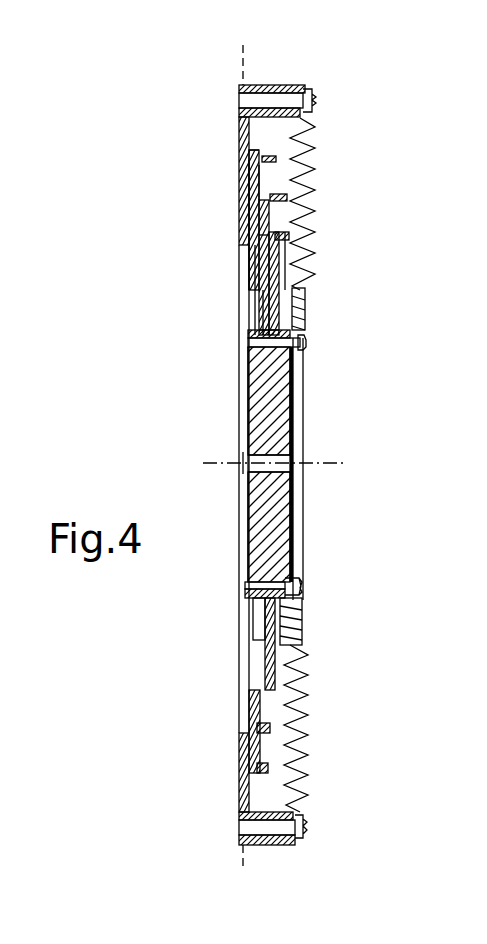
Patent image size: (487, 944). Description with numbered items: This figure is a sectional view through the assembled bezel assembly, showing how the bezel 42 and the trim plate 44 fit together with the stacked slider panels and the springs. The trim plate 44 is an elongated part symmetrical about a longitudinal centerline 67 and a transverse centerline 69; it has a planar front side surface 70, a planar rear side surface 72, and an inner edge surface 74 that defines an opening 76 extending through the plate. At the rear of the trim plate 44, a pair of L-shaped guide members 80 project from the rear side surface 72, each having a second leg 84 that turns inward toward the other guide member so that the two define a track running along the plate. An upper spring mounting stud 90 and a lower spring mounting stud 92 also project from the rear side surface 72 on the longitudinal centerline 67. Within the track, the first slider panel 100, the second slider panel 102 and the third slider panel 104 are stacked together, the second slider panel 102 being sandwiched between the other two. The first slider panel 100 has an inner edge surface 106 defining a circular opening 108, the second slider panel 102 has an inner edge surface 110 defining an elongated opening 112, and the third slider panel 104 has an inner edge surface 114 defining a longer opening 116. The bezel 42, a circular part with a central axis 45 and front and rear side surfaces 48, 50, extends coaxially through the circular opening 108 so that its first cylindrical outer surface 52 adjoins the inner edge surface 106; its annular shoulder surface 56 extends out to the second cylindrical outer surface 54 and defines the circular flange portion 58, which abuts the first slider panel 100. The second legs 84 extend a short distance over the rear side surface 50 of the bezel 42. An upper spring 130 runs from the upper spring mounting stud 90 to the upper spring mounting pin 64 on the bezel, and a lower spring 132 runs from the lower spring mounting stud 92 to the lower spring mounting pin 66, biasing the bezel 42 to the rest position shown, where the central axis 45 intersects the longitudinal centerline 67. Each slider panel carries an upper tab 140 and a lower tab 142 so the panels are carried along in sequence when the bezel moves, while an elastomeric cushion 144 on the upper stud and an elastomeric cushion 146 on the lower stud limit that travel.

The bezel 42 is at (306, 412).
The trim plate 44 is at (232, 125).
The central axis 45 is at (318, 463).
The front side surface 48 is at (248, 522).
The rear side surface 50 is at (292, 520).
The first cylindrical outer surface 52 is at (265, 603).
The second cylindrical outer surface 54 is at (268, 613).
The annular shoulder surface 56 is at (302, 625).
The circular flange portion 58 is at (284, 602).
The upper spring mounting pin 64 is at (304, 343).
The lower spring mounting pin 66 is at (298, 586).
The longitudinal centerline 67 is at (240, 53).
The transverse centerline 69 is at (243, 462).
The front side surface 70 is at (249, 163).
The rear side surface 72 is at (256, 145).
The inner edge surface 74 is at (249, 210).
The opening 76 is at (236, 228).
The guide member 80 is at (316, 373).
The second leg 84 is at (298, 392).
The upper spring mounting stud 90 is at (290, 93).
The lower spring mounting stud 92 is at (287, 845).
The first slider panel 100 is at (305, 292).
The second slider panel 102 is at (292, 255).
The third slider panel 104 is at (275, 180).
The inner edge surface 106 is at (262, 336).
The circular opening 108 is at (236, 382).
The inner edge surface 110 is at (263, 298).
The opening 112 is at (248, 317).
The inner edge surface 114 is at (259, 238).
The opening 116 is at (245, 278).
The upper spring 130 is at (312, 130).
The lower spring 132 is at (312, 755).
The upper tab 140 is at (279, 160).
The lower tab 142 is at (270, 767).
The elastomeric cushion 144 is at (262, 85).
The elastomeric cushion 146 is at (278, 808).